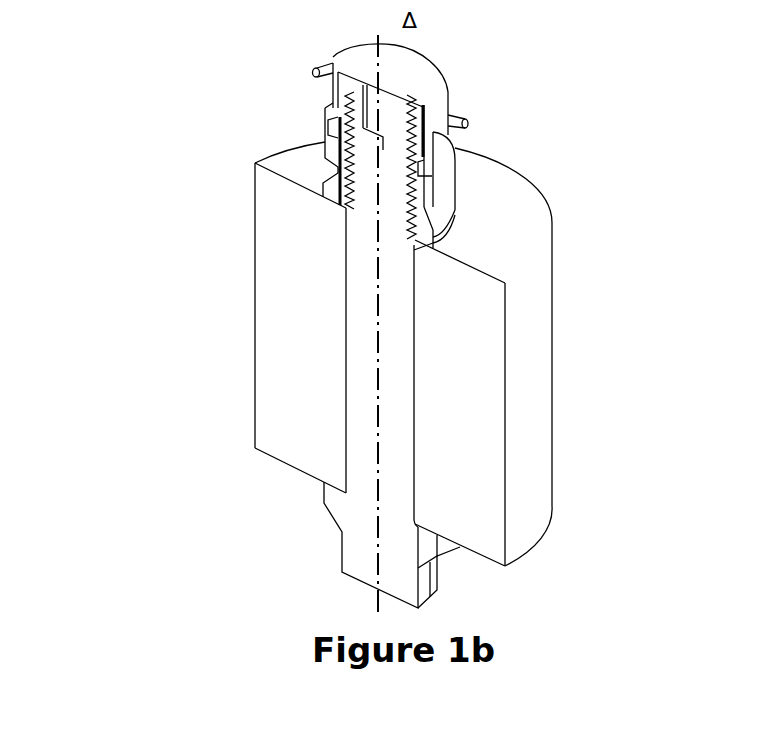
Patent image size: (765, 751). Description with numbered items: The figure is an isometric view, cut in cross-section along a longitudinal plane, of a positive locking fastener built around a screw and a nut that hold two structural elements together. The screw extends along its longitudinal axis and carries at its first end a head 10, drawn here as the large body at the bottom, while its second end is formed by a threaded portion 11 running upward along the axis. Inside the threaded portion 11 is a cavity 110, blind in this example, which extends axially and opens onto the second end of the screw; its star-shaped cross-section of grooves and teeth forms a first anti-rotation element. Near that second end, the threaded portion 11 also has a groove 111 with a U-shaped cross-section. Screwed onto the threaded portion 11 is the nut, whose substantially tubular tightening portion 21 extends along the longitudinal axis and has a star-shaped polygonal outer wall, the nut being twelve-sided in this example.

The head 10 is at (360, 533).
The threaded portion 11 is at (375, 184).
The cavity 110 is at (348, 123).
The groove 111 is at (348, 88).
The tightening portion 21 is at (328, 167).